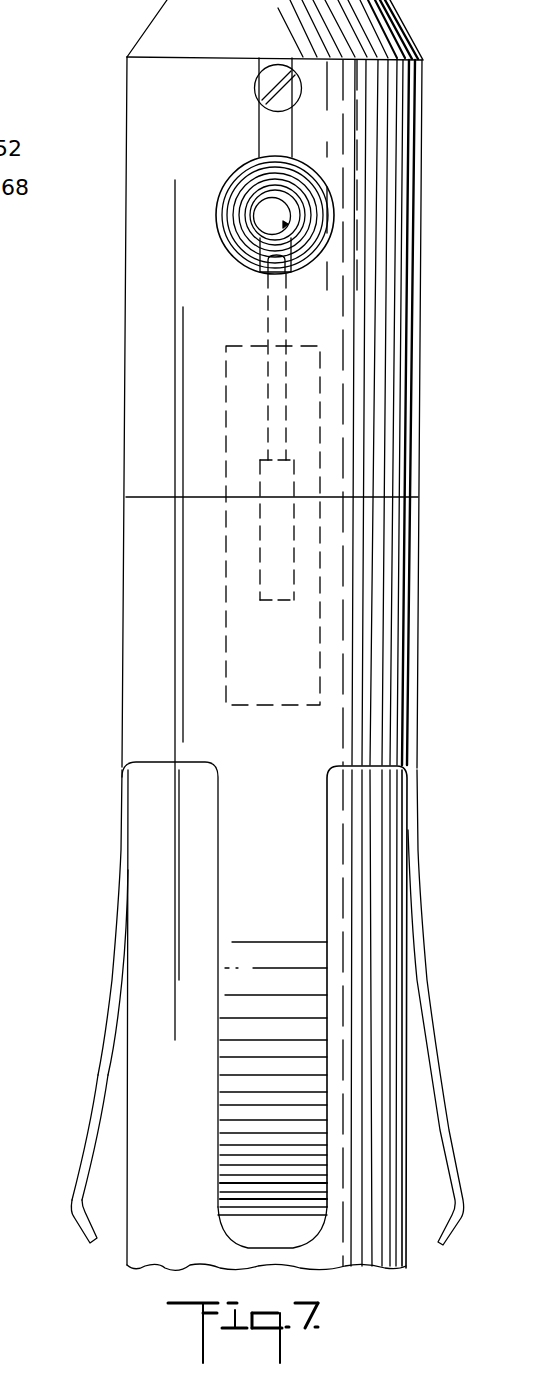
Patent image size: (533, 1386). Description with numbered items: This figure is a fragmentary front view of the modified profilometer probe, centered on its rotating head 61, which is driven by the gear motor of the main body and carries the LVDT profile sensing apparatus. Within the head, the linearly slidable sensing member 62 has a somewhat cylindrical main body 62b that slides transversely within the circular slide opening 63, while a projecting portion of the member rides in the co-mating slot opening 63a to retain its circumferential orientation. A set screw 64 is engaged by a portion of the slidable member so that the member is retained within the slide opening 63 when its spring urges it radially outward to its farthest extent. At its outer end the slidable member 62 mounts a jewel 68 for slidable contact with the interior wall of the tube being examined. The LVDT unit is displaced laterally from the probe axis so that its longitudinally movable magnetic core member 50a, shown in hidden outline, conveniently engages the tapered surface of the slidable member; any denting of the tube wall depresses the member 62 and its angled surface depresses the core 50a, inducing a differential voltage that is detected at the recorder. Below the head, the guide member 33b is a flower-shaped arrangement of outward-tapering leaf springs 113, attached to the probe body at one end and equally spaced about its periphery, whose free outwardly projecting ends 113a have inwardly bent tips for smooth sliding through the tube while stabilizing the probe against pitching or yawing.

The rotating head 61 is at (160, 17).
The set screw 64 is at (257, 80).
The slot opening 63a is at (296, 125).
The slidable sensing member 62 is at (307, 242).
The main body 62b is at (238, 168).
The slide opening 63 is at (220, 235).
The jewel 68 is at (282, 207).
The magnetic core member 50a is at (288, 313).
The guide member 33b is at (104, 1054).
The leaf springs 113 is at (85, 1146).
The outwardly projecting ends 113a is at (83, 1232).